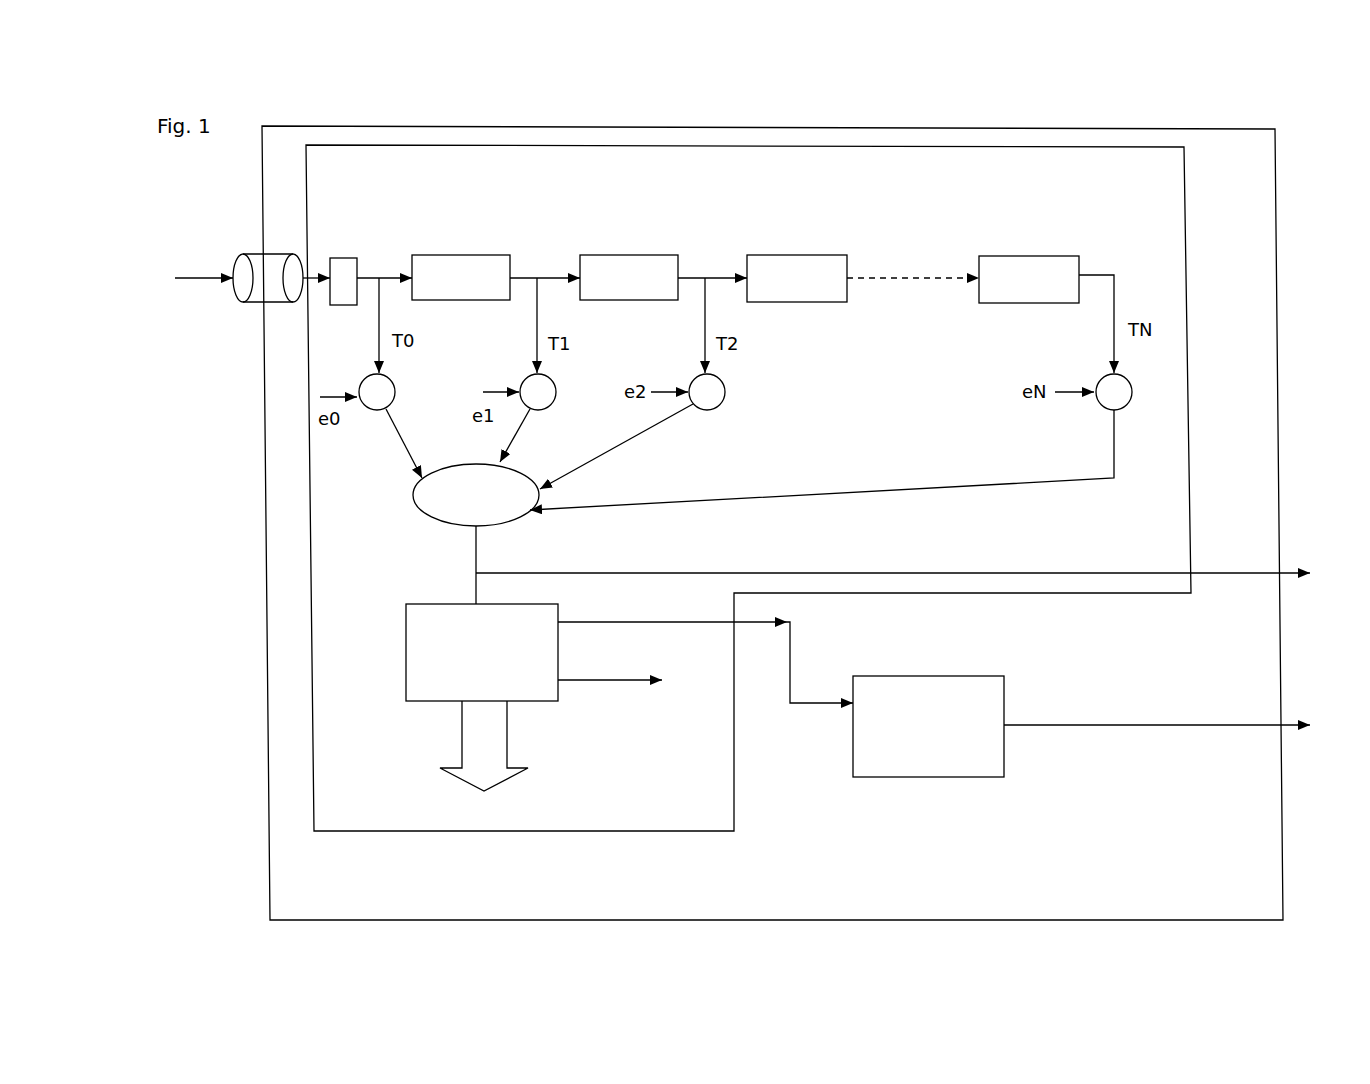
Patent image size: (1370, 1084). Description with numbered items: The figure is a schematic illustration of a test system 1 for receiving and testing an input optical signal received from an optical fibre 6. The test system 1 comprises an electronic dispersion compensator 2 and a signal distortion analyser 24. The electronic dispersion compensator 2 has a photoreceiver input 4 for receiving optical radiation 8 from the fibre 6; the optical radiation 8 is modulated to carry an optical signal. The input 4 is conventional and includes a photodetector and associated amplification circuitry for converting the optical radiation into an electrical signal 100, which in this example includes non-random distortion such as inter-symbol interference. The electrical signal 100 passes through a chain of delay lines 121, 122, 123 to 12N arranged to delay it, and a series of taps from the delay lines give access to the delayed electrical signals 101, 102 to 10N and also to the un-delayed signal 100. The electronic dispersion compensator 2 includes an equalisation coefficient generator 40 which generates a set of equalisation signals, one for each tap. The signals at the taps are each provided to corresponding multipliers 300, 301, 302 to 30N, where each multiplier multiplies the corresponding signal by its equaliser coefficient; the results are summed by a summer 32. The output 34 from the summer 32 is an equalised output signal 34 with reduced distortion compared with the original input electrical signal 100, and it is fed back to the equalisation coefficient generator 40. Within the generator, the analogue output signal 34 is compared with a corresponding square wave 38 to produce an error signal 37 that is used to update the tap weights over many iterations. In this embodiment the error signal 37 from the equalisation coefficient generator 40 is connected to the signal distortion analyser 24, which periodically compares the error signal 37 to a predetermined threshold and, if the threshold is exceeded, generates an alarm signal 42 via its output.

The test system 1 is at (585, 103).
The electronic dispersion compensator 2 is at (1035, 593).
The optical radiation 8 is at (192, 278).
The optical fibre 6 is at (268, 278).
The photoreceiver input 4 is at (343, 281).
The delay line 121 is at (461, 277).
The delay line 122 is at (629, 277).
The delay line 123 is at (797, 278).
The delay line 12N is at (1029, 279).
The electrical signal 100 is at (380, 262).
The delayed electrical signal 101 is at (520, 273).
The delayed electrical signal 102 is at (690, 273).
The delayed electrical signal 10N is at (1114, 272).
The multiplier 300 is at (396, 392).
The multiplier 301 is at (557, 392).
The multiplier 302 is at (726, 392).
The multiplier 30N is at (1133, 393).
The summer 32 is at (408, 500).
The equalised output signal 34 is at (478, 592).
The equalisation coefficient generator 40 is at (482, 713).
The error signal 37 is at (595, 622).
The square wave 38 is at (598, 682).
The signal distortion analyser 24 is at (928, 726).
The alarm signal 42 is at (1073, 728).